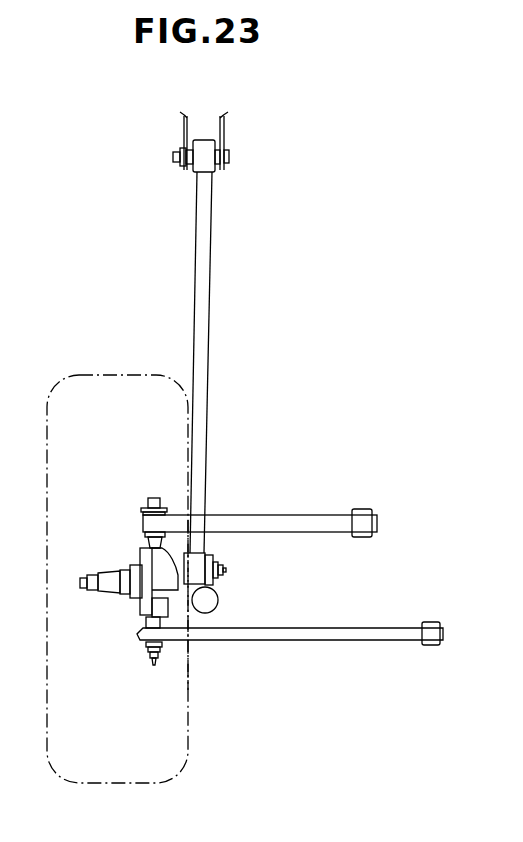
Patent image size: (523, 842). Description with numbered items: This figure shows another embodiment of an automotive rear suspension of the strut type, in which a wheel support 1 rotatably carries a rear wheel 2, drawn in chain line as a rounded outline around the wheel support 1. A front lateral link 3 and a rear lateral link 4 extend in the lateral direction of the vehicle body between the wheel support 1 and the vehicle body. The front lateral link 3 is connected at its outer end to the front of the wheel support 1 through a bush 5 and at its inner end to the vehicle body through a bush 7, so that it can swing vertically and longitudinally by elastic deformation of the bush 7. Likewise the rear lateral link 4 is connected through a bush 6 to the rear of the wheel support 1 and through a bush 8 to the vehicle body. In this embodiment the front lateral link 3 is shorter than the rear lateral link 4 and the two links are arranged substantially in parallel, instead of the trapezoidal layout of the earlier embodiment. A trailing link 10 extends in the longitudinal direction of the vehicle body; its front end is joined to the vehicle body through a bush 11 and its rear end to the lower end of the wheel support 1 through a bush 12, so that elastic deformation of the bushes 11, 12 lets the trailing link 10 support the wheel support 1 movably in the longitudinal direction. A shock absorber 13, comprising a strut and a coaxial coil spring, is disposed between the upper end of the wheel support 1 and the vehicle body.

The wheel support 1 is at (140, 553).
The rear wheel 2 is at (48, 405).
The front lateral link 3 is at (296, 516).
The rear lateral link 4 is at (300, 642).
The bush 5 is at (148, 523).
The bush 6 is at (140, 632).
The bush 7 is at (362, 520).
The bush 8 is at (433, 645).
The trailing link 10 is at (209, 305).
The bush 11 is at (212, 156).
The bush 12 is at (205, 558).
The shock absorber 13 is at (216, 608).